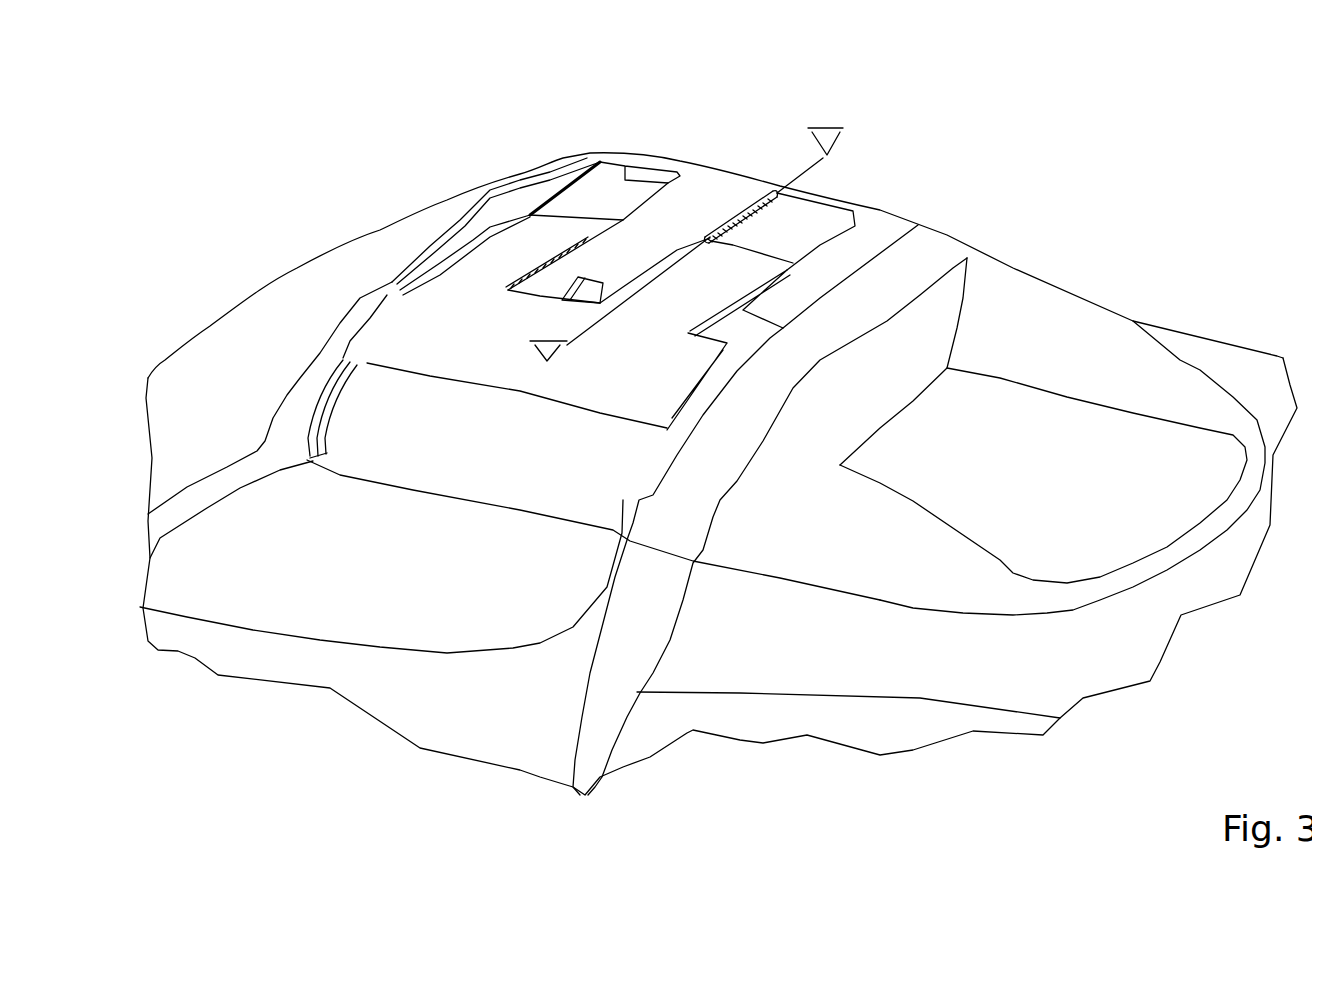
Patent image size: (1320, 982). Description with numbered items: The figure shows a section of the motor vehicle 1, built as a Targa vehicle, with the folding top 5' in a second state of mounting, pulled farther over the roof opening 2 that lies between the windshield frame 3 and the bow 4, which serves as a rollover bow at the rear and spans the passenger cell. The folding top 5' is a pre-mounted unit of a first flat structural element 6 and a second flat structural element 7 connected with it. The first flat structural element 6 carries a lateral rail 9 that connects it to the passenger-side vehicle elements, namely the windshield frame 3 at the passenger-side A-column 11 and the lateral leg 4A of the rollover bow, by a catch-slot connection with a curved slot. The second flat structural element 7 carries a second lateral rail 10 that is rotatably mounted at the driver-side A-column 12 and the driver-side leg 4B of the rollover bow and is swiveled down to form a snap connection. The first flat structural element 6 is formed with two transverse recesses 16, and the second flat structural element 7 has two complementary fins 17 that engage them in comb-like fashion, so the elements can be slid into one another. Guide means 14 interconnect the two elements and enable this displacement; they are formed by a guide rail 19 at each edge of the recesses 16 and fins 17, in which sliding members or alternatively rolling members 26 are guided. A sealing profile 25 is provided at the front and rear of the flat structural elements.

The motor vehicle 1 is at (220, 338).
The roof opening 2 is at (365, 390).
The windshield frame 3 is at (288, 418).
The bow 4 is at (907, 275).
The lateral leg of the rollover bow 4A is at (948, 235).
The driver-side leg of the rollover bow 4B is at (633, 595).
The folding top 5' is at (471, 210).
The first flat structural element 6 is at (693, 202).
The second flat structural element 7 is at (387, 297).
The lateral rail 9 is at (903, 218).
The second lateral rail 10 is at (357, 355).
The passenger-side A-column 11 is at (587, 152).
The driver-side A-column 12 is at (268, 462).
The guide means 14 is at (757, 203).
The recesses 16 is at (805, 228).
The fins 17 is at (552, 235).
The guide rail 19 is at (723, 228).
The sealing profile 25 is at (322, 400).
The rolling members 26 is at (710, 237).